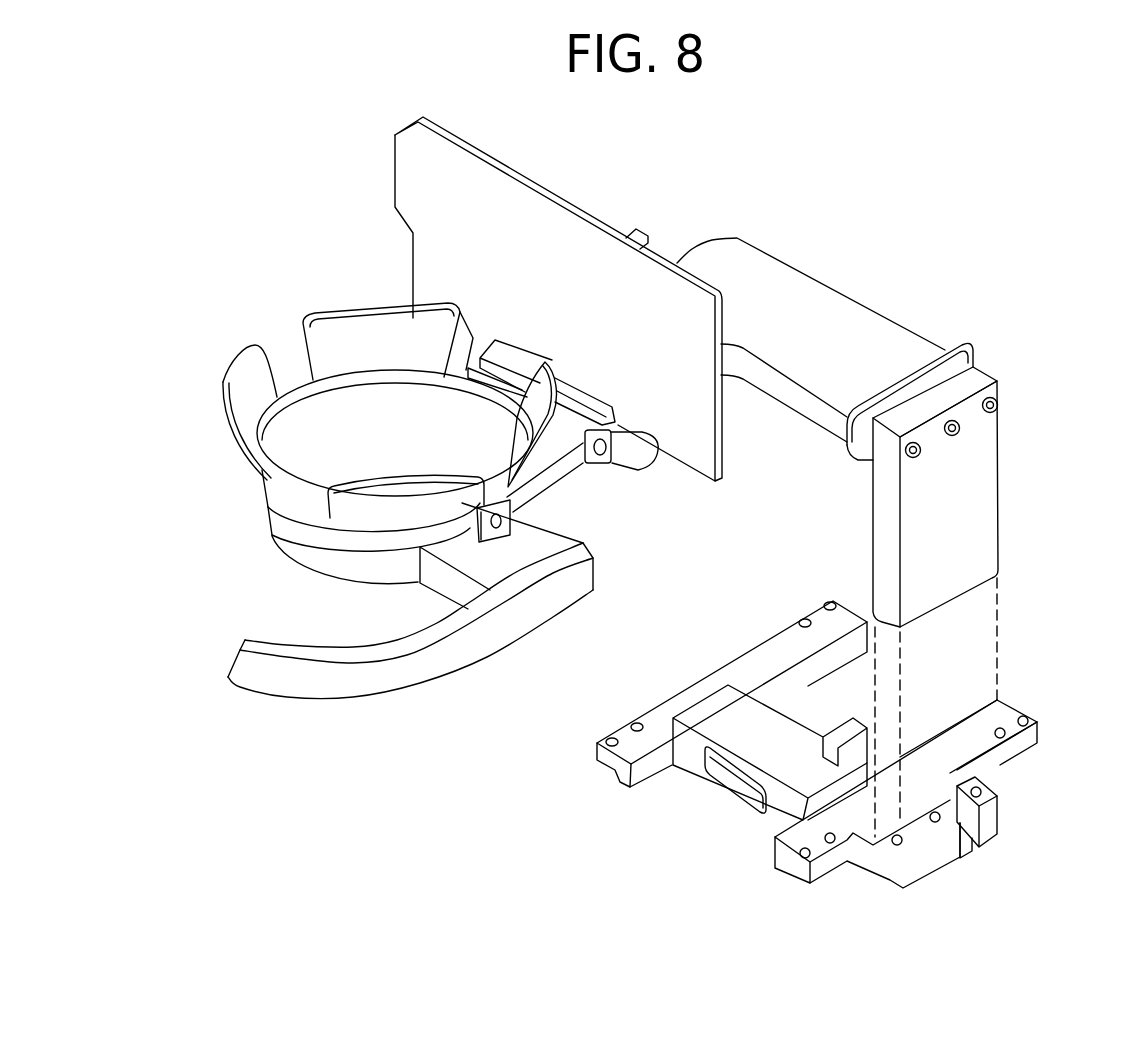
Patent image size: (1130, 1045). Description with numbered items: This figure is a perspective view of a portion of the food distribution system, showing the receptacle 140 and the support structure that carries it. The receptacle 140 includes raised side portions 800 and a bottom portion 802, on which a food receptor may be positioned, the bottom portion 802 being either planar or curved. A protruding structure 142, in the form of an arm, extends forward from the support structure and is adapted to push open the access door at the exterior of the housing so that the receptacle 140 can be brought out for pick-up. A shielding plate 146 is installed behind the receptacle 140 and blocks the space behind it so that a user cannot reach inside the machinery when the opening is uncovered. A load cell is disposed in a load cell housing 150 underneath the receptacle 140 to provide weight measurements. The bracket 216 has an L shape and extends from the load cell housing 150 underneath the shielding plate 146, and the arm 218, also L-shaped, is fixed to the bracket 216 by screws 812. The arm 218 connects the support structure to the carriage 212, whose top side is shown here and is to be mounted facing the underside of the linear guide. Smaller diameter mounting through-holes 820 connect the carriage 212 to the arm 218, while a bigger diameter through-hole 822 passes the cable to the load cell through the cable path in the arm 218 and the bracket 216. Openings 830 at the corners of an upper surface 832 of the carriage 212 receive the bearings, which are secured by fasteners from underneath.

The receptacle 140 is at (311, 285).
The protruding structure 142 is at (296, 700).
The shielding plate 146 is at (481, 148).
The load cell housing 150 is at (273, 538).
The carriage 212 is at (843, 888).
The bracket 216 is at (813, 279).
The arm 218 is at (872, 512).
The raised side portions 800 is at (222, 392).
The bottom portion 802 is at (313, 414).
The screws 812 is at (1000, 410).
The mounting through-holes 820 is at (978, 798).
The through-hole 822 is at (967, 843).
The openings 830 is at (1030, 719).
The upper surface 832 is at (1007, 712).